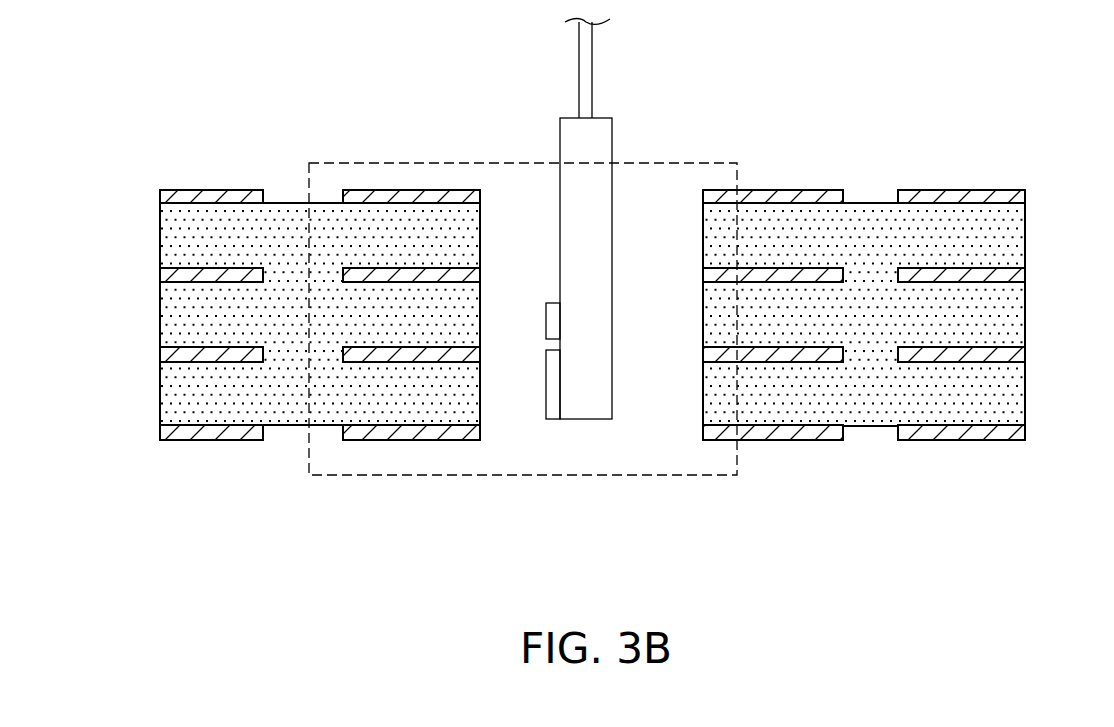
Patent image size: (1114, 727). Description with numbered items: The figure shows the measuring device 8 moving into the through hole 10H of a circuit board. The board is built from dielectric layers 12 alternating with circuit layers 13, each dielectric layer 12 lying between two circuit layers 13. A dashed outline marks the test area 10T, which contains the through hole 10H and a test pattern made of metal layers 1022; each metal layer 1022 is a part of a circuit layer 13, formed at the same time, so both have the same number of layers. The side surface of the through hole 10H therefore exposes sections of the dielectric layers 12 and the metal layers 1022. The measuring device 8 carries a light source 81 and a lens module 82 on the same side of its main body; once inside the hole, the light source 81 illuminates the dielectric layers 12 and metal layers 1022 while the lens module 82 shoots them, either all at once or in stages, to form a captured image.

The measuring device 8 is at (601, 127).
The light source 81 is at (552, 322).
The lens module 82 is at (552, 382).
The through hole 10H is at (677, 190).
The test area 10T is at (706, 478).
The dielectric layer 12 is at (177, 237).
The circuit layer 13 is at (175, 190).
The metal layer 1022 is at (384, 196).